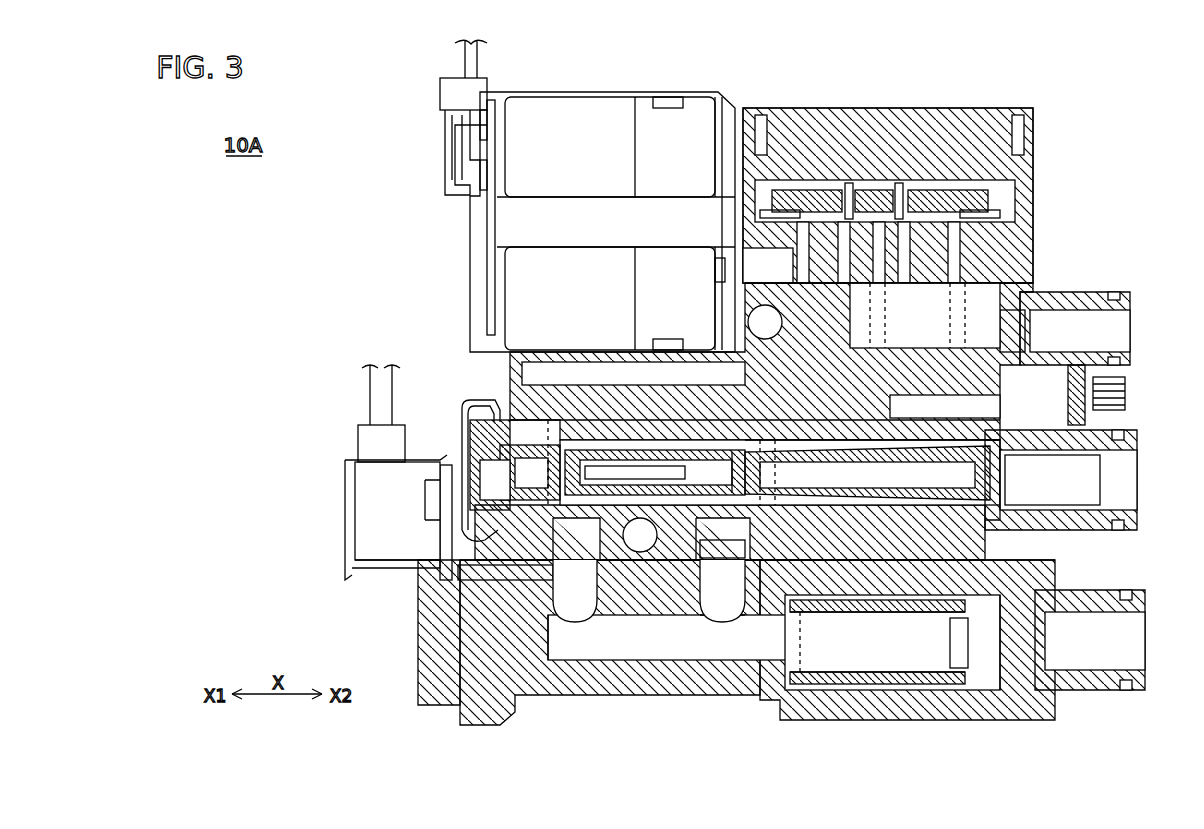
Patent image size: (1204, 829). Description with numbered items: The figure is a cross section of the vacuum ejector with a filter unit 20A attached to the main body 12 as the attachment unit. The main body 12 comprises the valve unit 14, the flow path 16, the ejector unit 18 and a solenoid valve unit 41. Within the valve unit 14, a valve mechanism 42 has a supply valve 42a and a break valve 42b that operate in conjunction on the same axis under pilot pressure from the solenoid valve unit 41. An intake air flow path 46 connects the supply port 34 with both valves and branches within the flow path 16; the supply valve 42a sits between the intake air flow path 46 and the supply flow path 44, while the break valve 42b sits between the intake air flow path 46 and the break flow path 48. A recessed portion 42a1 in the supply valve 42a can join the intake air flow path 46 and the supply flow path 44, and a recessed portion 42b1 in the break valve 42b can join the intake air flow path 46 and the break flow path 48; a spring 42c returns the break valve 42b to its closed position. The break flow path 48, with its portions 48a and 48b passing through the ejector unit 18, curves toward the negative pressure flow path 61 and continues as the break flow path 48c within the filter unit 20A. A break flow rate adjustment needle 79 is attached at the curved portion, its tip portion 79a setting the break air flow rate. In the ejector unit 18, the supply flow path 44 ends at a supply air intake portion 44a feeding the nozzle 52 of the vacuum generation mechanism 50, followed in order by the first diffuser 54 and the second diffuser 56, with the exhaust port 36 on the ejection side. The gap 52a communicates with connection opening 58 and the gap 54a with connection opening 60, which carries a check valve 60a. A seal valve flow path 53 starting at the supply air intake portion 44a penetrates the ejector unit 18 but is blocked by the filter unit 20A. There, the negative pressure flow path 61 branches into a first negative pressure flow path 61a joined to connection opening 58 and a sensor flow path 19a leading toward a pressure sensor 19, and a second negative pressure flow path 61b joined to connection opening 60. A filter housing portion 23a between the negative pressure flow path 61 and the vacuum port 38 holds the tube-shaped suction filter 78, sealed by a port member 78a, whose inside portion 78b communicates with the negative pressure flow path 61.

The main body 12 is at (1040, 122).
The valve unit 14 is at (1033, 165).
The flow path 16 is at (1020, 280).
The ejector unit 18 is at (1137, 478).
The pressure sensor 19 is at (365, 512).
The sensor flow path 19a is at (445, 565).
The filter unit 20A is at (1062, 712).
The filter housing portion 23a is at (985, 680).
The supply port 34 is at (1092, 292).
The exhaust port 36 is at (1135, 433).
The vacuum port 38 is at (1147, 630).
The solenoid valve unit 41 is at (545, 92).
The valve mechanism 42 is at (891, 203).
The supply valve 42a is at (822, 186).
The recessed portion 42a1 is at (800, 220).
The break valve 42b is at (952, 186).
The recessed portion 42b1 is at (1000, 226).
The spring 42c is at (898, 186).
The supply flow path 44 is at (765, 280).
The supply air intake portion 44a is at (487, 410).
The intake air flow path 46 is at (872, 182).
The break flow path 48 is at (1000, 252).
The first passage 48a is at (860, 430).
The break flow path 48b is at (780, 486).
The break flow path 48c is at (808, 625).
The vacuum generation mechanism 50 is at (497, 490).
The nozzle 52 is at (520, 465).
The gap 52a is at (585, 478).
The seal valve flow path 53 is at (550, 445).
The first diffuser 54 is at (688, 478).
The gap 54a is at (740, 462).
The second diffuser 56 is at (872, 510).
The connection opening 58 is at (574, 562).
The connection opening 60 is at (752, 545).
The check valve 60a is at (748, 558).
The negative pressure flow path 61 is at (628, 648).
The first negative pressure flow path 61a is at (580, 614).
The second negative pressure flow path 61b is at (728, 617).
The suction filter 78 is at (836, 684).
The port member 78a is at (950, 642).
The inside portion 78b is at (882, 672).
The break flow rate adjustment needle 79 is at (1120, 390).
The tip portion 79a is at (932, 395).